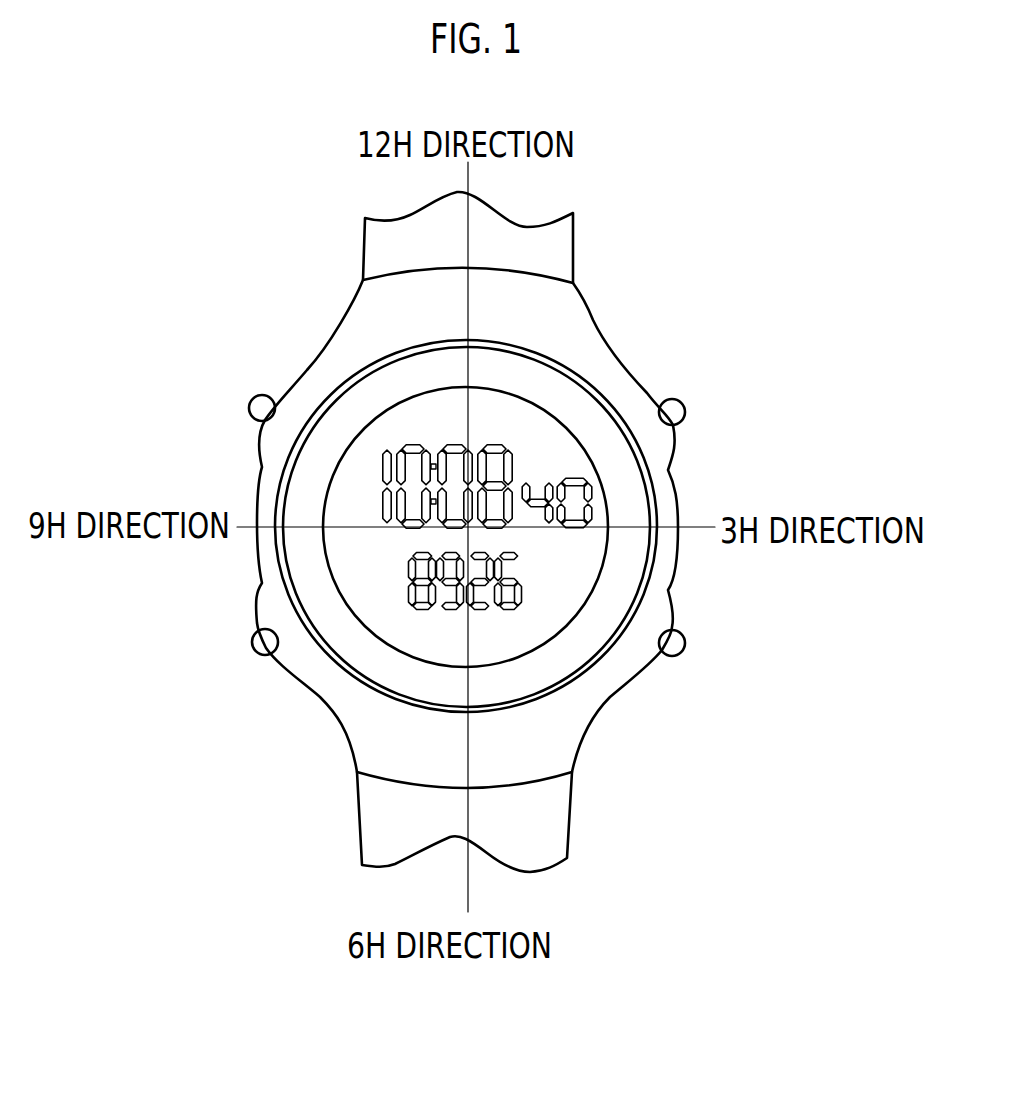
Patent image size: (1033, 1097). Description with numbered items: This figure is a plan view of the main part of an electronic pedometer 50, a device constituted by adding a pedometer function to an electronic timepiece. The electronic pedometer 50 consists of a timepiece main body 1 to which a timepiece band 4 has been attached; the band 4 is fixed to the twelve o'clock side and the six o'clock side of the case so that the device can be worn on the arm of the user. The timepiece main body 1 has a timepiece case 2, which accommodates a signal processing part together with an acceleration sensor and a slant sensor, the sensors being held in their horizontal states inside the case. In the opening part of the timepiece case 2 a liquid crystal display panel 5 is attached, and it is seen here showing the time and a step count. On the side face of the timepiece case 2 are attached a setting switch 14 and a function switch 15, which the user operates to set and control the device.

The timepiece main body 1 is at (590, 352).
The timepiece case 2 is at (378, 320).
The timepiece band 4 is at (400, 242).
The liquid crystal display panel 5 is at (397, 618).
The setting switch 14 is at (266, 410).
The function switch 15 is at (266, 643).
The electronic pedometer 50 is at (683, 210).